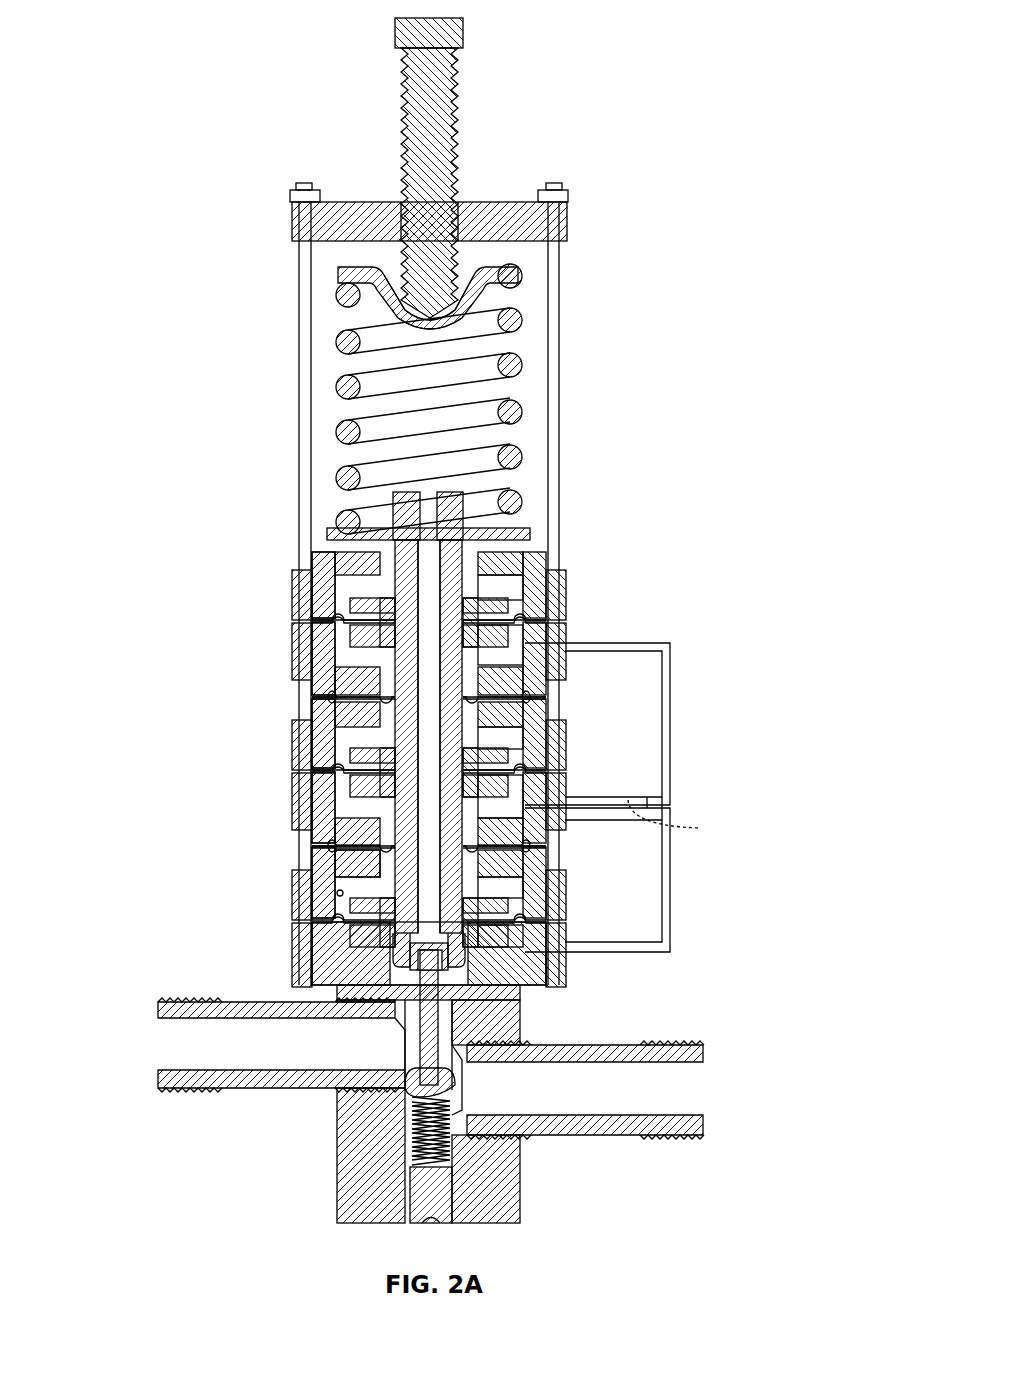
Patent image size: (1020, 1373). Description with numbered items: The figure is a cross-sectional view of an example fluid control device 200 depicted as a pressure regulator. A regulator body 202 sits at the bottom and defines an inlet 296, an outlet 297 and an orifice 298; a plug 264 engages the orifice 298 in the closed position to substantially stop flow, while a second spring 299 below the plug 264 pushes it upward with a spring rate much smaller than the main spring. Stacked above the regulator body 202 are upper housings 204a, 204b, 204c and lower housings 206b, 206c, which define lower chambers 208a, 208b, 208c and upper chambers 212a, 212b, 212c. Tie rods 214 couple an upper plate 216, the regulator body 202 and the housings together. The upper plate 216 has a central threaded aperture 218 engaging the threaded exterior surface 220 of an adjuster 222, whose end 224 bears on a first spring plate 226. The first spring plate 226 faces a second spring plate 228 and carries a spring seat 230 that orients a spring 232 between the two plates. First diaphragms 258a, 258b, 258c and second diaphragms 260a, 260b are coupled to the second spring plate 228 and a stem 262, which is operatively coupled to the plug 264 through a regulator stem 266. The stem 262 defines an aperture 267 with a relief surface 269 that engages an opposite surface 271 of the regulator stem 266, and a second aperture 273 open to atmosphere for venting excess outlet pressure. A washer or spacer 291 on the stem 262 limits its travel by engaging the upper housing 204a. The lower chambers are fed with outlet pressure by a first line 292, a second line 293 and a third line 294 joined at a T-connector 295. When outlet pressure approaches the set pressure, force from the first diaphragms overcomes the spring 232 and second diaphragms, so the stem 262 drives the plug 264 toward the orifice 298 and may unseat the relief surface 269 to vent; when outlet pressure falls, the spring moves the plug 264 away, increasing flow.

The fluid control device 200 is at (148, 52).
The regulator body 202 is at (330, 931).
The upper housing 204a is at (538, 884).
The upper housing 204b is at (538, 734).
The upper housing 204c is at (535, 580).
The lower housing 206b is at (330, 772).
The lower housing 206c is at (330, 621).
The lower chamber 208a is at (528, 940).
The lower chamber 208b is at (528, 792).
The lower chamber 208c is at (530, 655).
The upper chamber 212a is at (335, 868).
The upper chamber 212b is at (335, 720).
The upper chamber 212c is at (335, 570).
The tie rods 214 is at (560, 295).
The upper plate 216 is at (480, 202).
The threaded aperture 218 is at (405, 185).
The threaded exterior surface 220 is at (458, 118).
The adjuster 222 is at (463, 40).
The end of adjuster 224 is at (378, 318).
The first spring plate 226 is at (340, 278).
The second spring plate 228 is at (530, 530).
The spring seat 230 is at (445, 336).
The spring 232 is at (512, 412).
The first diaphragm 258a is at (330, 900).
The first diaphragm 258b is at (330, 750).
The first diaphragm 258c is at (330, 605).
The second diaphragm 260a is at (330, 846).
The second diaphragm 260b is at (330, 696).
The stem 262 is at (392, 497).
The plug 264 is at (480, 1130).
The regulator stem 266 is at (415, 970).
The aperture 267 is at (405, 950).
The relief surface 269 is at (458, 1002).
The opposite surface 271 is at (520, 992).
The second aperture 273 is at (427, 575).
The washer or spacer 291 is at (338, 893).
The first line 292 is at (668, 880).
The second line 293 is at (690, 820).
The third line 294 is at (670, 673).
The T-connector 295 is at (668, 803).
The inlet 296 is at (690, 1086).
The outlet 297 is at (162, 1055).
The orifice 298 is at (410, 1080).
The second spring 299 is at (420, 1135).